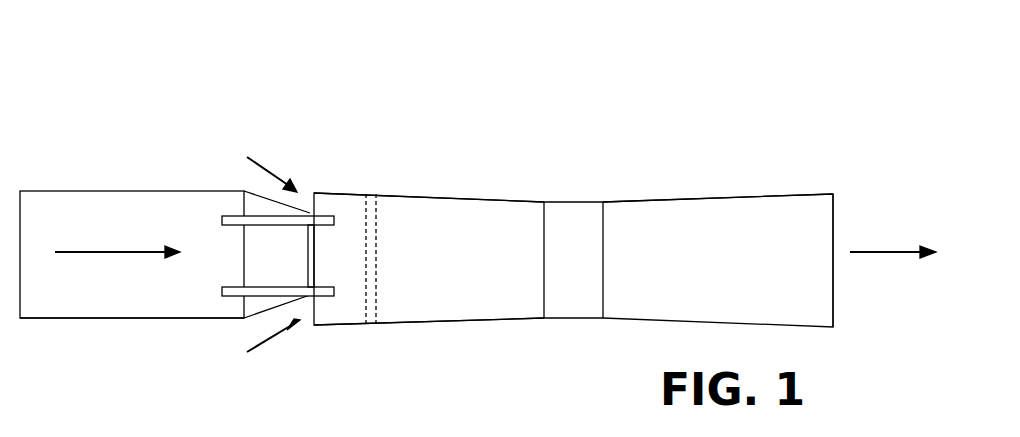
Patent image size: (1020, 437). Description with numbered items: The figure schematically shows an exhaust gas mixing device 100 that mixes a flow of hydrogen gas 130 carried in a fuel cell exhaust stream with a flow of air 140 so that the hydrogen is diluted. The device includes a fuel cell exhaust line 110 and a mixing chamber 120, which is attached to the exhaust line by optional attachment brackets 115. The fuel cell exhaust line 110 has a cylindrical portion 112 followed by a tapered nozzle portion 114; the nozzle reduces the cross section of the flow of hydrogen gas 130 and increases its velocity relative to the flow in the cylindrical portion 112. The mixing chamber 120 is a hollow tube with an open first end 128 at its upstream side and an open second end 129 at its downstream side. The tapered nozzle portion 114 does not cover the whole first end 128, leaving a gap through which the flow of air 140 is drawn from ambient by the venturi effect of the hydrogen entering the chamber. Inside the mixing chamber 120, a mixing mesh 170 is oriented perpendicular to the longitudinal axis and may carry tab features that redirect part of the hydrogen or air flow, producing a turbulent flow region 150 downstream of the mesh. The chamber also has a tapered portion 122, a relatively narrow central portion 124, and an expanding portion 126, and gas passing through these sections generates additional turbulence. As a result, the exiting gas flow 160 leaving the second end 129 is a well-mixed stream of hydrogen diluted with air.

The exhaust gas mixing device 100 is at (123, 69).
The fuel cell exhaust line 110 is at (97, 188).
The cylindrical portion 112 is at (112, 305).
The tapered nozzle portion 114 is at (307, 298).
The attachment brackets 115 is at (230, 215).
The mixing chamber 120 is at (732, 193).
The tapered portion 122 is at (398, 194).
The central portion 124 is at (577, 202).
The expanding portion 126 is at (768, 205).
The first end 128 is at (313, 192).
The second end 129 is at (833, 223).
The flow of hydrogen gas 130 is at (123, 248).
The flow of air 140 is at (268, 158).
The turbulent flow region 150 is at (443, 257).
The exiting gas flow 160 is at (880, 253).
The mixing mesh 170 is at (363, 293).